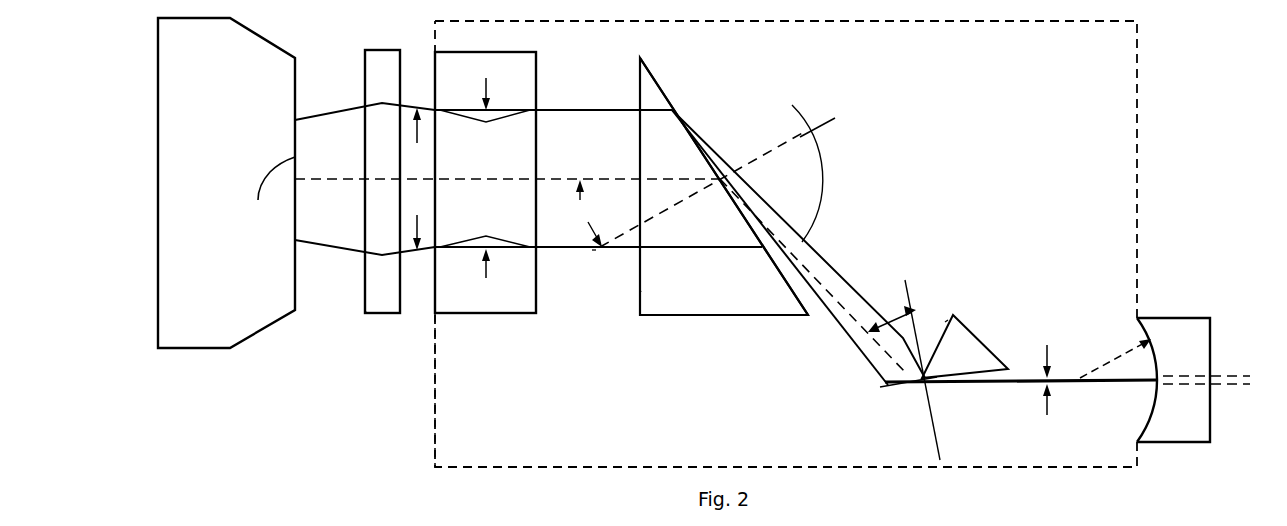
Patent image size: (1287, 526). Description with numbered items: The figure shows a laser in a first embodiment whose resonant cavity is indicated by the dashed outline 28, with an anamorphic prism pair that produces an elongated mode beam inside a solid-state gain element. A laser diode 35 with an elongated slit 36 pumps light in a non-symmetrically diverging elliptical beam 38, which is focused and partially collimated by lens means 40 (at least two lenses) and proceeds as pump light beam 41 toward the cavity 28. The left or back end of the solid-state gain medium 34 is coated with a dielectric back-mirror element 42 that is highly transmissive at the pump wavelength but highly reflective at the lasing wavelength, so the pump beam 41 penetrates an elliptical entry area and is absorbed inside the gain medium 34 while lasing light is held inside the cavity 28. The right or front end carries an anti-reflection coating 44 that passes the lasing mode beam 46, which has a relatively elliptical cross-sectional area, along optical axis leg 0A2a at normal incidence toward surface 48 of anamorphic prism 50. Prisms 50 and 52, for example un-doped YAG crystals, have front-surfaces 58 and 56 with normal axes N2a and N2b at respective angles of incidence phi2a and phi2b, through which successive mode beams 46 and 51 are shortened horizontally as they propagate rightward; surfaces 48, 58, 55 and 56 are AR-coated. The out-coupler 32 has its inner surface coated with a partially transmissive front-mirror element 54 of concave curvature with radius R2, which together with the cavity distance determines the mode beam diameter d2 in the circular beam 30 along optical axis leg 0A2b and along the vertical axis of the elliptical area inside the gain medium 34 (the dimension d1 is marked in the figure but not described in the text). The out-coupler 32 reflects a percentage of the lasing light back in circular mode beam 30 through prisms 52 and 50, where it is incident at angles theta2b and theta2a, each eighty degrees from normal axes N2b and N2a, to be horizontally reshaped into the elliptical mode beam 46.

The cavity 28 is at (1028, 171).
The beam 30 is at (1077, 379).
The out-coupler 32 is at (1184, 358).
The solid-state gain medium 34 is at (479, 316).
The laser diode 35 is at (236, 99).
The elongated slit 36 is at (258, 200).
The elliptical beam 38 is at (343, 243).
The lens means 40 is at (365, 312).
The pump light beam 41 is at (415, 305).
The back-mirror element 42 is at (433, 318).
The anti-reflection coating 44 is at (536, 302).
The mode beam 46 is at (592, 249).
The surface 48 is at (642, 292).
The anamorphic prism 50 is at (697, 296).
The mode beam 51 is at (860, 345).
The prism 52 is at (958, 363).
The front-mirror element 54 is at (1142, 420).
The optical surface 55 is at (945, 322).
The front-surface 56 is at (887, 383).
The front-surface 58 is at (672, 100).
The collimator lens thickness d1 is at (486, 78).
The mode beam diameter d2 is at (1044, 365).
The optical axis leg 0A2a is at (571, 177).
The optical axis leg 0A2b is at (1063, 380).
The angle of incidence phi2a is at (593, 213).
The angle of incidence phi2b is at (893, 318).
The normal axis N2a is at (793, 140).
The normal axis N2b is at (926, 418).
The angle of incidence theta2a is at (811, 132).
The angle of incidence theta2b is at (994, 385).
The radius R2 is at (1085, 388).